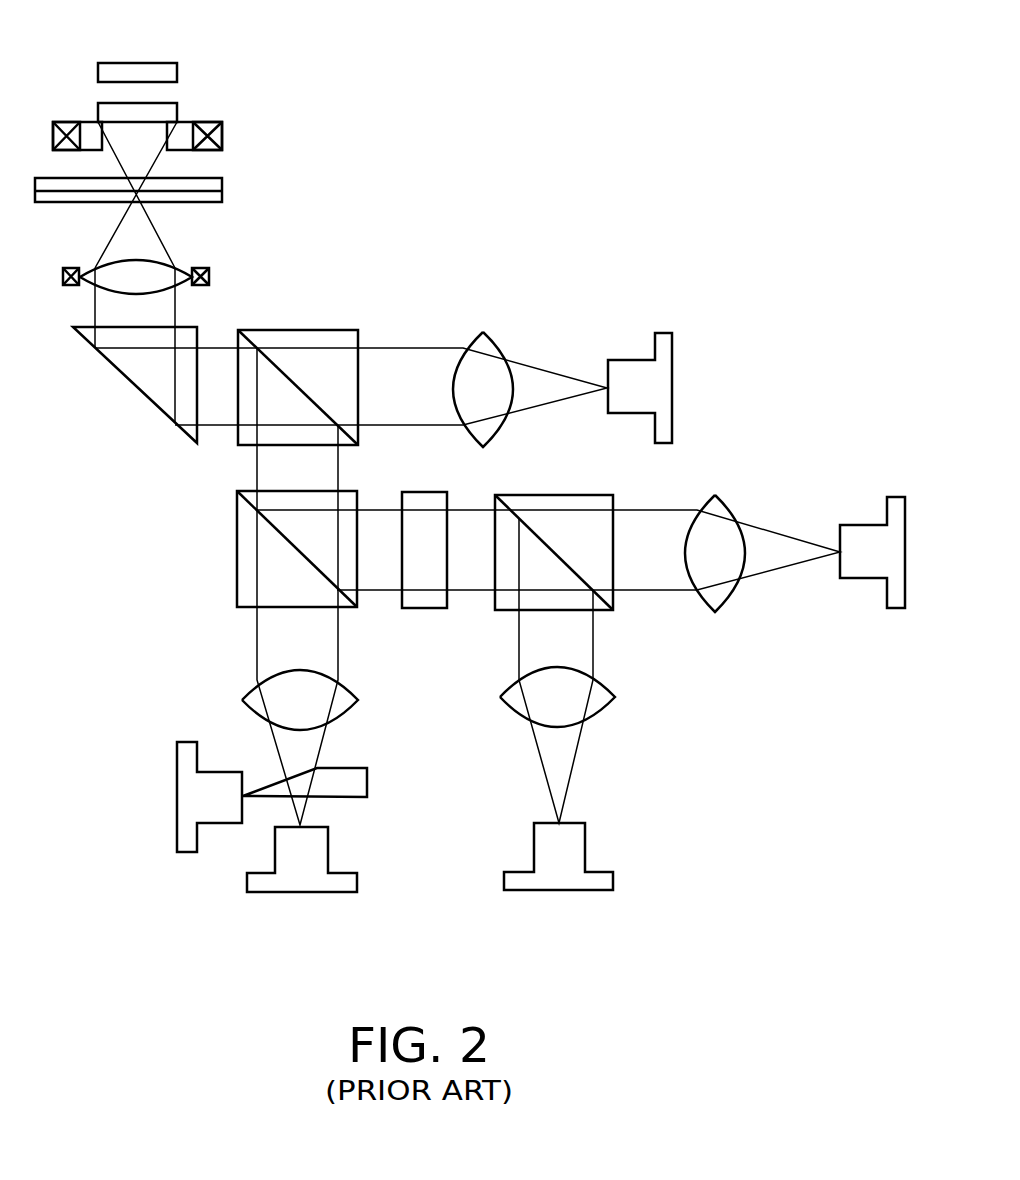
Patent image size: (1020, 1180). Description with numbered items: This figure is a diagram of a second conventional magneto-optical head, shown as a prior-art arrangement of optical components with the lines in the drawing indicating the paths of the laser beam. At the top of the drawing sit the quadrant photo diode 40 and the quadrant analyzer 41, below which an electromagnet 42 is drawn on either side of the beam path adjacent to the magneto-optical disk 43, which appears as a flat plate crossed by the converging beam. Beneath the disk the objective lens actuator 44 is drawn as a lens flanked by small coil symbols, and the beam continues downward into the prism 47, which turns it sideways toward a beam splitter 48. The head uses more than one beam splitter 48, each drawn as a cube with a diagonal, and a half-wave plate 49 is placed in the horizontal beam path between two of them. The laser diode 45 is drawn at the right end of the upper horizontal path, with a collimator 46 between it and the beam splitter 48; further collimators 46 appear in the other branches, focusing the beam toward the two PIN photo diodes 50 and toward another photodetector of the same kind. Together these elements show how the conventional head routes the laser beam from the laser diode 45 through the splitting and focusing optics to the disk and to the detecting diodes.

The quadrant photo diode 40 is at (136, 62).
The quadrant analyzer 41 is at (180, 112).
The electromagnet 42 is at (222, 134).
The magneto-optical disk 43 is at (222, 189).
The objective lens actuator 44 is at (210, 277).
The laser diode 45 is at (672, 377).
The collimator 46 is at (505, 348).
The prism 47 is at (148, 402).
The beam splitter 48 is at (315, 330).
The half-wave plate 49 is at (432, 608).
The PIN photo diode 50 is at (860, 578).